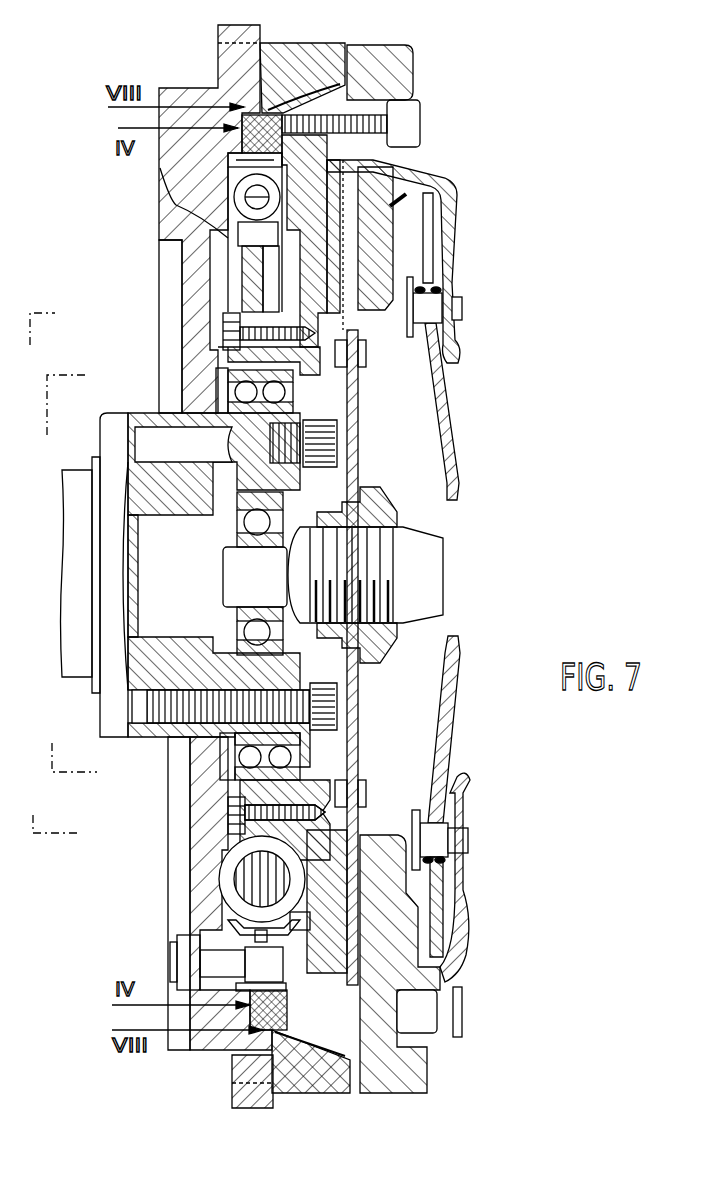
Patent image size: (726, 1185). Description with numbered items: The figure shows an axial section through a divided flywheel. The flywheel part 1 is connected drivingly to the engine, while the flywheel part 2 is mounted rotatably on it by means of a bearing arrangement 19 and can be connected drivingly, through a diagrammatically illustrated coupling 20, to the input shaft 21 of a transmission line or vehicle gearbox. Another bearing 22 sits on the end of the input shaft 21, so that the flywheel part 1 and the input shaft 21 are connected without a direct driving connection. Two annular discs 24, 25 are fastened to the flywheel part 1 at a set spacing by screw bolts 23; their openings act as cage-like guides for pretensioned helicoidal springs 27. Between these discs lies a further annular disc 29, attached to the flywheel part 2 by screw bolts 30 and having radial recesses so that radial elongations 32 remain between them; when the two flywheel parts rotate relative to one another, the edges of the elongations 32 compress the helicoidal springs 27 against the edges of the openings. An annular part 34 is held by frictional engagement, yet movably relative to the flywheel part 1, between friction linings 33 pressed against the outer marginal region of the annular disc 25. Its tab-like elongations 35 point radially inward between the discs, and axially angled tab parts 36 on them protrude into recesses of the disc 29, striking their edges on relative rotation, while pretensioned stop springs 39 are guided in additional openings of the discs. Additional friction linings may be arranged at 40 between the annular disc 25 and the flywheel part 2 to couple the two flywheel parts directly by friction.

The flywheel part 1 is at (197, 97).
The flywheel part 2 is at (400, 88).
The bearing arrangement 19 is at (280, 393).
The coupling 20 is at (440, 167).
The input shaft 21 is at (425, 563).
The bearing 22 is at (237, 523).
The screw bolts 23 is at (217, 963).
The annular disc 24 is at (300, 920).
The annular disc 25 is at (300, 922).
The helicoidal springs 27 is at (233, 872).
The annular disc 29 is at (250, 292).
The screw bolts 30 is at (227, 320).
The radial elongations 32 is at (260, 937).
The friction linings 33 is at (247, 998).
The annular part 34 is at (265, 113).
The tab-like elongations 35 is at (260, 163).
The tab parts 36 is at (253, 227).
The stop springs 39 is at (238, 193).
The additional friction linings location 40 is at (285, 112).